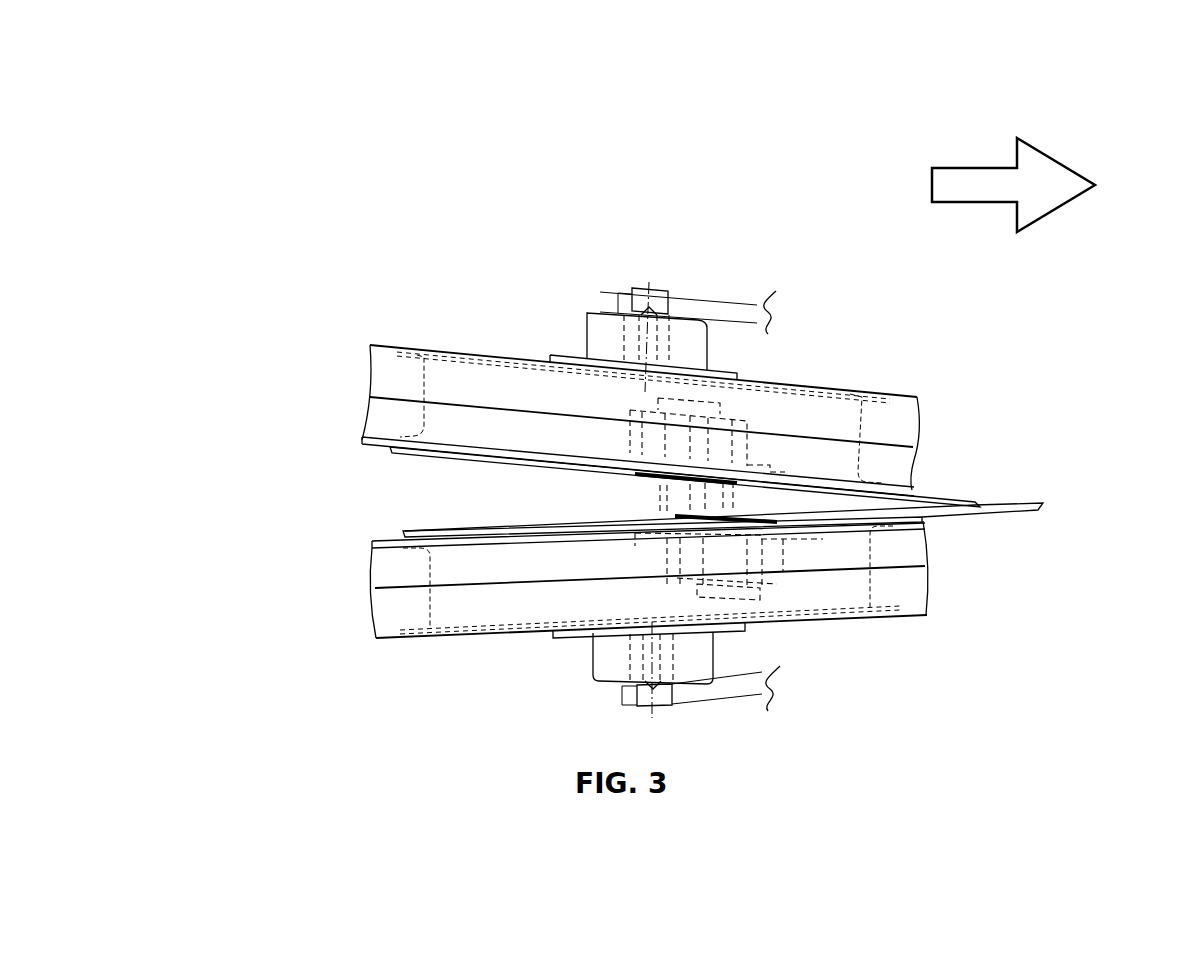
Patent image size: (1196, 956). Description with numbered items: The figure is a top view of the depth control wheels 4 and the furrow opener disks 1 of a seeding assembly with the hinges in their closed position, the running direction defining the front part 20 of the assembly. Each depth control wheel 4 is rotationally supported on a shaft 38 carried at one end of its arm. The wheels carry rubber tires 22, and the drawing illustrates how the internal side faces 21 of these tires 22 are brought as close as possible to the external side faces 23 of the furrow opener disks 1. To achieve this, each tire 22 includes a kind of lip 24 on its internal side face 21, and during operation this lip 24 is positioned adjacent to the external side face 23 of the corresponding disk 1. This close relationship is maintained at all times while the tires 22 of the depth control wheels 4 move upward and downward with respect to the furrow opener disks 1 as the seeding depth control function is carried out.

The furrow opener disk 1 is at (960, 494).
The depth control wheel 4 is at (764, 362).
The front part 20 is at (1096, 159).
The internal side face 21 is at (358, 440).
The rubber tire 22 is at (385, 373).
The external side face 23 is at (918, 488).
The lip 24 is at (368, 543).
The shaft 38 is at (658, 289).